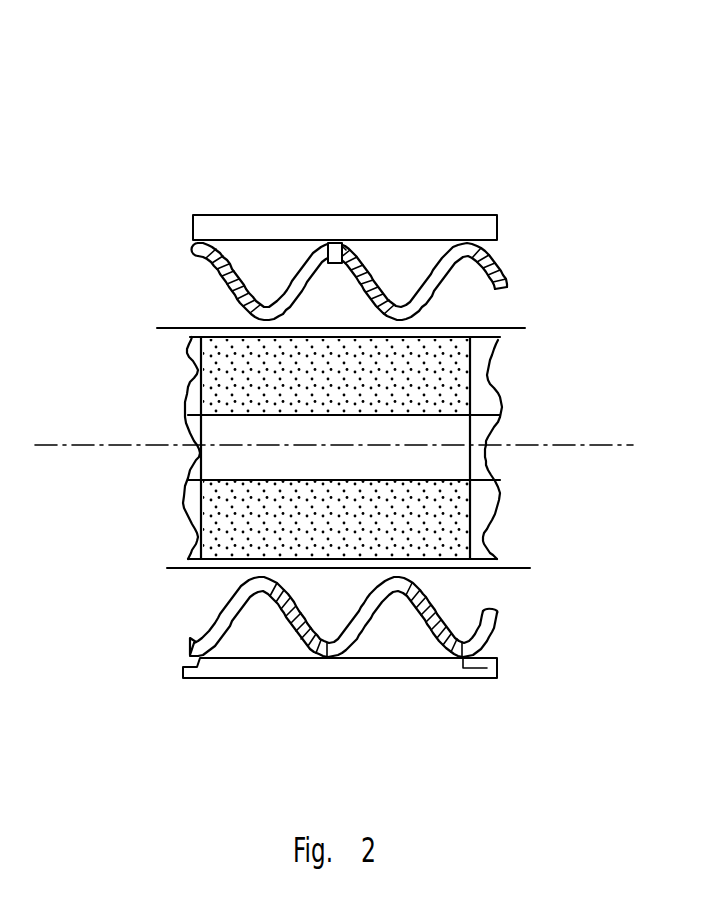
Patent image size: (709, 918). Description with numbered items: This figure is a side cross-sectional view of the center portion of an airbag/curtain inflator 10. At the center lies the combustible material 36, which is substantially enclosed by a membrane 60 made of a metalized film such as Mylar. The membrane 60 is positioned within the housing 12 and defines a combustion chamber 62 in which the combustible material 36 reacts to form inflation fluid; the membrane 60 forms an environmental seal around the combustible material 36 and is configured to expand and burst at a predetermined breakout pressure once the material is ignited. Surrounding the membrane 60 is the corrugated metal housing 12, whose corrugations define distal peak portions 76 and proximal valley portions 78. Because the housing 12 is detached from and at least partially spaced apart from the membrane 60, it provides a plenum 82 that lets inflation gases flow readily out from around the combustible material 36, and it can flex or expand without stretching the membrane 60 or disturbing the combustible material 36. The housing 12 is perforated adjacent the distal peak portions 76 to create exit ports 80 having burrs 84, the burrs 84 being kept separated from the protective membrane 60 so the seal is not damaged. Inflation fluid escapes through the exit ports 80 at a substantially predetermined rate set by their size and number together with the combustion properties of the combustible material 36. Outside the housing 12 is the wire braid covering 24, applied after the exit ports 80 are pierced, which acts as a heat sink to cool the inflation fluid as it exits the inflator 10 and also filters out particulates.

The inflator 10 is at (567, 217).
The corrugated housing 12 is at (433, 268).
The wire braid covering 24 is at (213, 222).
The combustible material 36 is at (437, 367).
The membrane 60 is at (525, 330).
The combustion chamber 62 is at (457, 465).
The distal peak portions 76 is at (307, 240).
The proximal valley portions 78 is at (403, 297).
The exit ports 80 is at (332, 240).
The plenum 82 is at (347, 313).
The burrs 84 is at (339, 240).